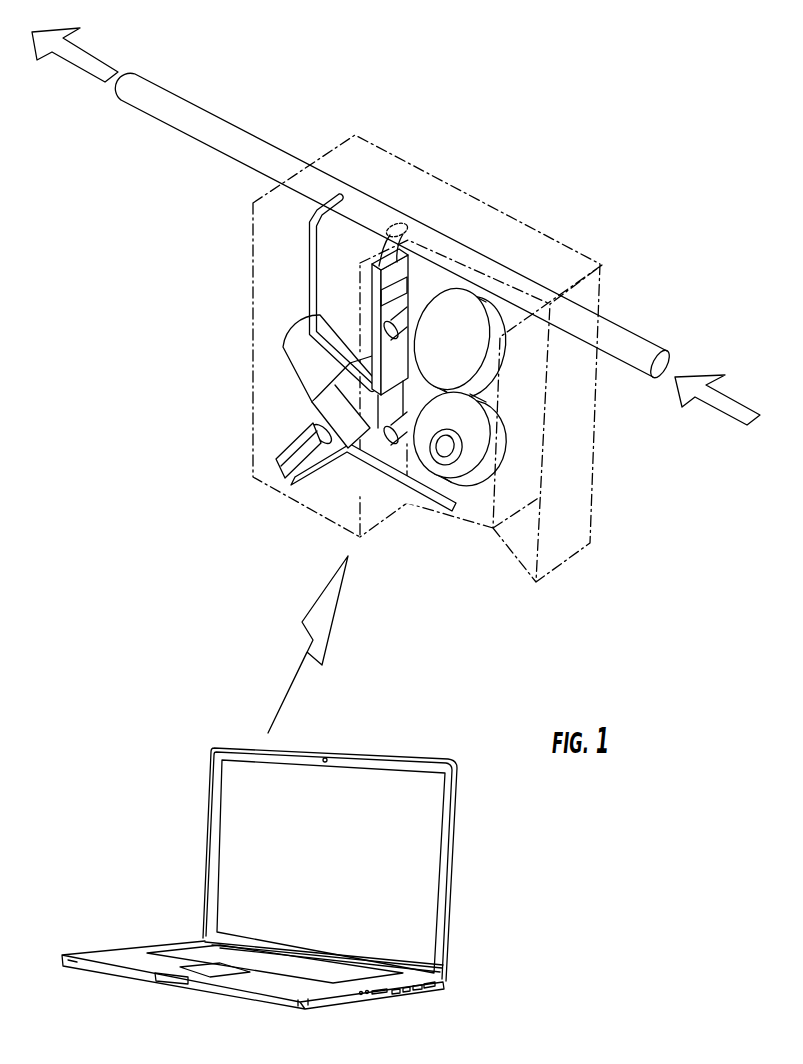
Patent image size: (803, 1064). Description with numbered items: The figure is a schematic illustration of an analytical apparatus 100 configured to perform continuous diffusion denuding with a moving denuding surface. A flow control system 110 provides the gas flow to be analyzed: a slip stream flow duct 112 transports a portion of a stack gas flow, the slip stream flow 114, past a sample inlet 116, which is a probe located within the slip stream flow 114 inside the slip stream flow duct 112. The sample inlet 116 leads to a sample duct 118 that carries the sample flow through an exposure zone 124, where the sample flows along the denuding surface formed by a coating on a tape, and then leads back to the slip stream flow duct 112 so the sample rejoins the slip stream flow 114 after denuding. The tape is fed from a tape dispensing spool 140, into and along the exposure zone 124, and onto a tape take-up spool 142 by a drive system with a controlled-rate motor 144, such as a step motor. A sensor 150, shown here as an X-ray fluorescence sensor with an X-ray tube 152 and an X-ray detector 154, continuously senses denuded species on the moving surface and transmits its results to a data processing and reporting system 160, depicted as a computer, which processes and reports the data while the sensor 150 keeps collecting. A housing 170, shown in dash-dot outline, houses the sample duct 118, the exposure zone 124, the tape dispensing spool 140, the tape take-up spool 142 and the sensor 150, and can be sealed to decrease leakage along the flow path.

The analytical apparatus 100 is at (578, 127).
The flow control system 110 is at (390, 165).
The slip stream flow duct 112 is at (643, 336).
The slip stream flow 114 is at (728, 418).
The sample inlet 116 is at (397, 228).
The sample duct 118 is at (404, 268).
The exposure zone 124 is at (361, 289).
The tape dispensing spool 140 is at (502, 355).
The tape take-up spool 142 is at (500, 446).
The controlled-rate motor 144 is at (451, 464).
The sensor 150 is at (324, 434).
The X-ray tube 152 is at (286, 350).
The X-ray detector 154 is at (288, 450).
The data processing and reporting system 160 is at (454, 872).
The housing 170 is at (484, 523).